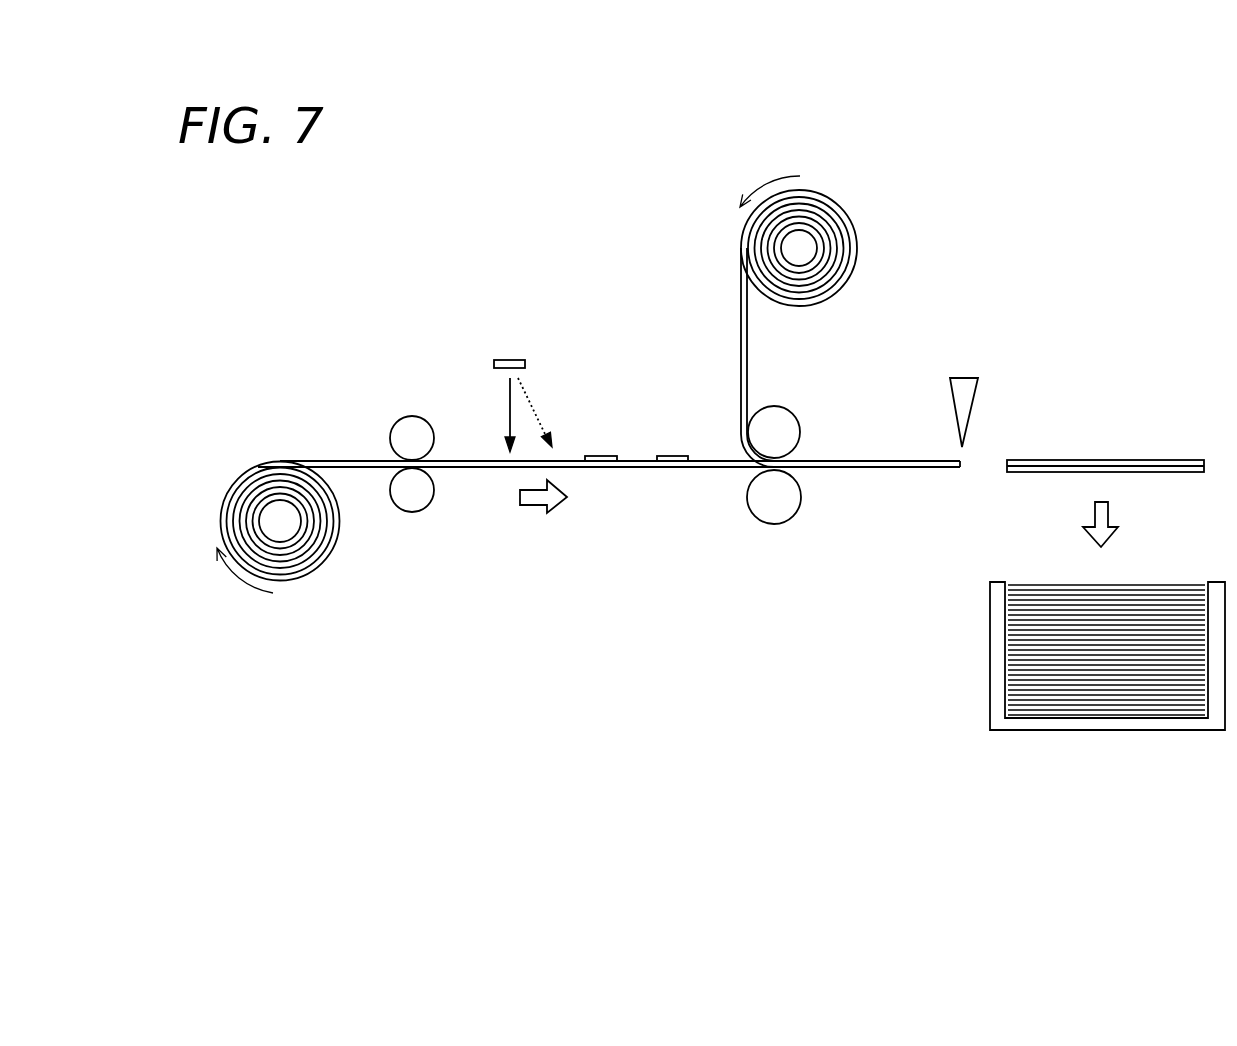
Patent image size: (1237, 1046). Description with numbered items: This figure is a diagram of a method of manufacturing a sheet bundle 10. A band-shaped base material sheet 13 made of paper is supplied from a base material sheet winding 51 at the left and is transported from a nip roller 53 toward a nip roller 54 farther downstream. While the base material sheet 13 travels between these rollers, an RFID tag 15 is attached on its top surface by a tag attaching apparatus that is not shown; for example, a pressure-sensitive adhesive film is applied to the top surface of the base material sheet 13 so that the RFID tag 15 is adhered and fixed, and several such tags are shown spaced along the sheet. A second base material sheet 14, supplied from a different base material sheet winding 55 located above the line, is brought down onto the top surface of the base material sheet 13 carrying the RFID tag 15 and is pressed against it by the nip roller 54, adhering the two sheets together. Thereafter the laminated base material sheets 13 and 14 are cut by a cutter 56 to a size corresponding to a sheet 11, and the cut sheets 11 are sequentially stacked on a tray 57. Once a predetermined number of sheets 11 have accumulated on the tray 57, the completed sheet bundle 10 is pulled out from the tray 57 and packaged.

The sheet bundle 10 is at (1175, 575).
The sheet 11 is at (1112, 460).
The base material sheet 13 is at (642, 468).
The base material sheet 14 is at (865, 458).
The RFID tag 15 is at (510, 360).
The base material sheet winding 51 is at (307, 568).
The nip roller 53 is at (413, 500).
The nip roller 54 is at (773, 513).
The base material sheet winding 55 is at (847, 275).
The cutter 56 is at (962, 378).
The tray 57 is at (1105, 730).